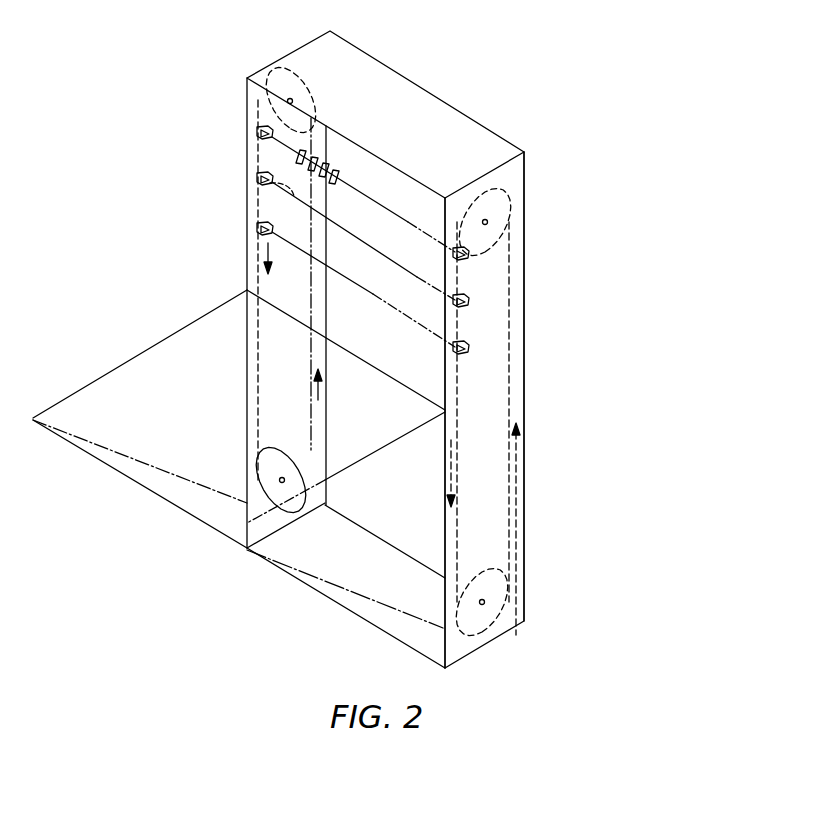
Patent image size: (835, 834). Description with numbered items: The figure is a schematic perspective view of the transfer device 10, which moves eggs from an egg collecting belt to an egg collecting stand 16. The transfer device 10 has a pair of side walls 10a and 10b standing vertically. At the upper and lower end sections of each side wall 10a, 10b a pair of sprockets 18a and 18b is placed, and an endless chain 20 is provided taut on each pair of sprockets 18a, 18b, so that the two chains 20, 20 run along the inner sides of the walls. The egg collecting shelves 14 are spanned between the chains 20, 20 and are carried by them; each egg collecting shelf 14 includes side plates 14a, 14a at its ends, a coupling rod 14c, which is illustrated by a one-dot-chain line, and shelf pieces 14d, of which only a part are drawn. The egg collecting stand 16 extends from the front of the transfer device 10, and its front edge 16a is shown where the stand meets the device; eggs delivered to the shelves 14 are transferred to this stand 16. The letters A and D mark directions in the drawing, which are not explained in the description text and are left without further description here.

The transfer device 10 is at (441, 77).
The side wall 10a is at (247, 104).
The side wall 10b is at (520, 370).
The egg collecting shelf 14 is at (383, 220).
The side plate 14a is at (258, 134).
The coupling rod 14c is at (292, 232).
The shelf piece 14d is at (297, 157).
The egg collecting stand 16 is at (142, 493).
The front edge 16a is at (285, 300).
The sprocket 18a is at (264, 125).
The sprocket 18b is at (286, 506).
The chain 20 is at (318, 128).
The direction A is at (510, 287).
The direction D is at (447, 540).